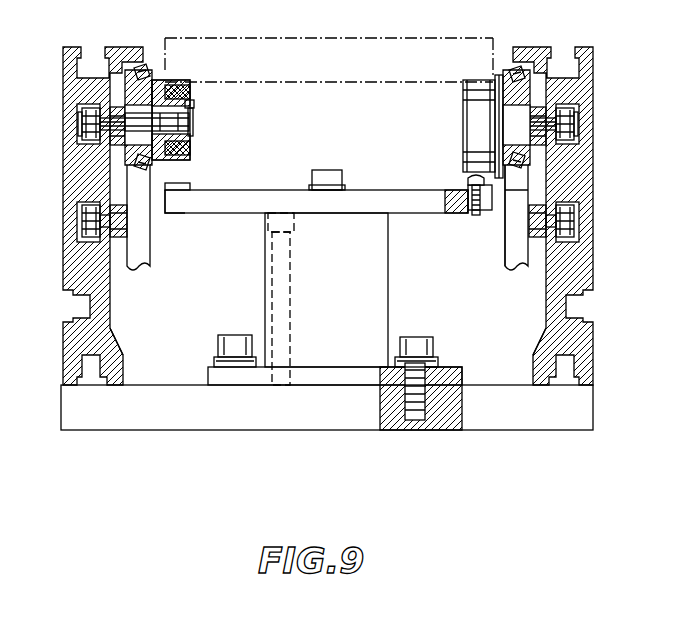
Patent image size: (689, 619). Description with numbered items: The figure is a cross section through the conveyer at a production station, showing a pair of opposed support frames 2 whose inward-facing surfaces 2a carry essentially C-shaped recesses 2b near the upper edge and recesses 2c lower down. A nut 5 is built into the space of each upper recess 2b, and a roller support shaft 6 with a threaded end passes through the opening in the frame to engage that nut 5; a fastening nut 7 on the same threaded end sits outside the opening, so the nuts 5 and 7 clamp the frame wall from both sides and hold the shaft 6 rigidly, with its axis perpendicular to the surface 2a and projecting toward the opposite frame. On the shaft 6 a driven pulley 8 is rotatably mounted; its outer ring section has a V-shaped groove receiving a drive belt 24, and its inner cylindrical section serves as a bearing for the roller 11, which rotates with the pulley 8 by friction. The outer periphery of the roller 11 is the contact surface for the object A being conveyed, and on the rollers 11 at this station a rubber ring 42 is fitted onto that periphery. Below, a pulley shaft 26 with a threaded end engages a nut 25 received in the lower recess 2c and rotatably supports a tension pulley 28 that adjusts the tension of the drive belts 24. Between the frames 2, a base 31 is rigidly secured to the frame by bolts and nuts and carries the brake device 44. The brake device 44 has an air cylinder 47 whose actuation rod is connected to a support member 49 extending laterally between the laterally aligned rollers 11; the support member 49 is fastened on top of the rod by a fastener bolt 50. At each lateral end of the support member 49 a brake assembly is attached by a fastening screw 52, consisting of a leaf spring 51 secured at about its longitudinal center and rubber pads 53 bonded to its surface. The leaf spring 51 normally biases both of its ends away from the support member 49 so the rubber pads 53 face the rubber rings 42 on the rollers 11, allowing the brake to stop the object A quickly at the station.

The object to be conveyed A is at (356, 38).
The support frame 2 is at (58, 286).
The opposing surface 2a is at (116, 326).
The C-shaped recess 2b is at (82, 128).
The C-shaped recess 2c is at (85, 220).
The nut 5 is at (90, 115).
The roller support shaft 6 is at (193, 126).
The fastening nut 7 is at (112, 142).
The driven pulley 8 is at (150, 70).
The roller 11 is at (194, 104).
The drive belt 24 is at (136, 78).
The nut 25 is at (115, 218).
The pulley shaft 26 is at (140, 248).
The tension pulley 28 is at (506, 270).
The base 31 is at (228, 430).
The rubber ring 42 is at (176, 80).
The brake device 44 is at (262, 278).
The air cylinder 47 is at (390, 280).
The support member 49 is at (245, 203).
The fastener bolt 50 is at (328, 172).
The leaf spring 51 is at (178, 196).
The fastening screw 52 is at (470, 184).
The rubber pad 53 is at (186, 186).